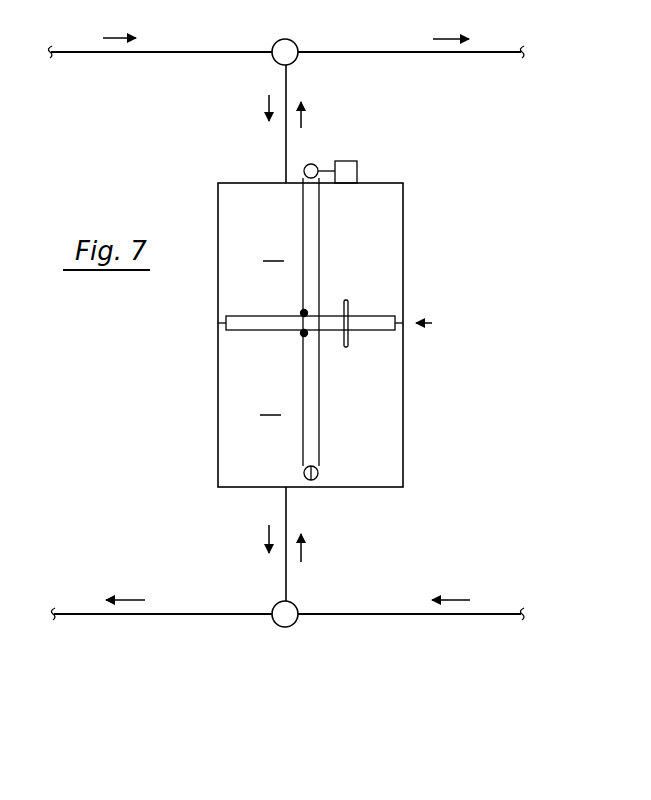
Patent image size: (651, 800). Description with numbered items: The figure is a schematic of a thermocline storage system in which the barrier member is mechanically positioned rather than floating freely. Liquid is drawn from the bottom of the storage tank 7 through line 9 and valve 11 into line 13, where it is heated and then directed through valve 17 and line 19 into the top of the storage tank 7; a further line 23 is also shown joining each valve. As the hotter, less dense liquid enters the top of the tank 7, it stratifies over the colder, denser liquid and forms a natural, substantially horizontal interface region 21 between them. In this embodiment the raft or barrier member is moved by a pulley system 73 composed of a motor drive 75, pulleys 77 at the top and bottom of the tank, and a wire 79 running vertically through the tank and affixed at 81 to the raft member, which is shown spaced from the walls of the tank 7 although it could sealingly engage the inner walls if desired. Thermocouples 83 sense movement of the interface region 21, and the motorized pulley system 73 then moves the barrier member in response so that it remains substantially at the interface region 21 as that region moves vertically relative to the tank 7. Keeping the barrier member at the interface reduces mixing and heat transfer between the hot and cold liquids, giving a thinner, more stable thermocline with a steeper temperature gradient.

The storage tank 7 is at (218, 398).
The line 9 is at (286, 581).
The valve 11 is at (295, 604).
The line 13 is at (87, 52).
The valve 17 is at (292, 45).
The line 19 is at (286, 78).
The interface region 21 is at (341, 323).
The right pipe 23 is at (491, 52).
The pulley system 73 is at (370, 147).
The motor drive 75 is at (357, 174).
The pulleys 77 is at (312, 165).
The wire 79 is at (319, 410).
The affixing points 81 is at (301, 312).
The thermocouples 83 is at (346, 300).